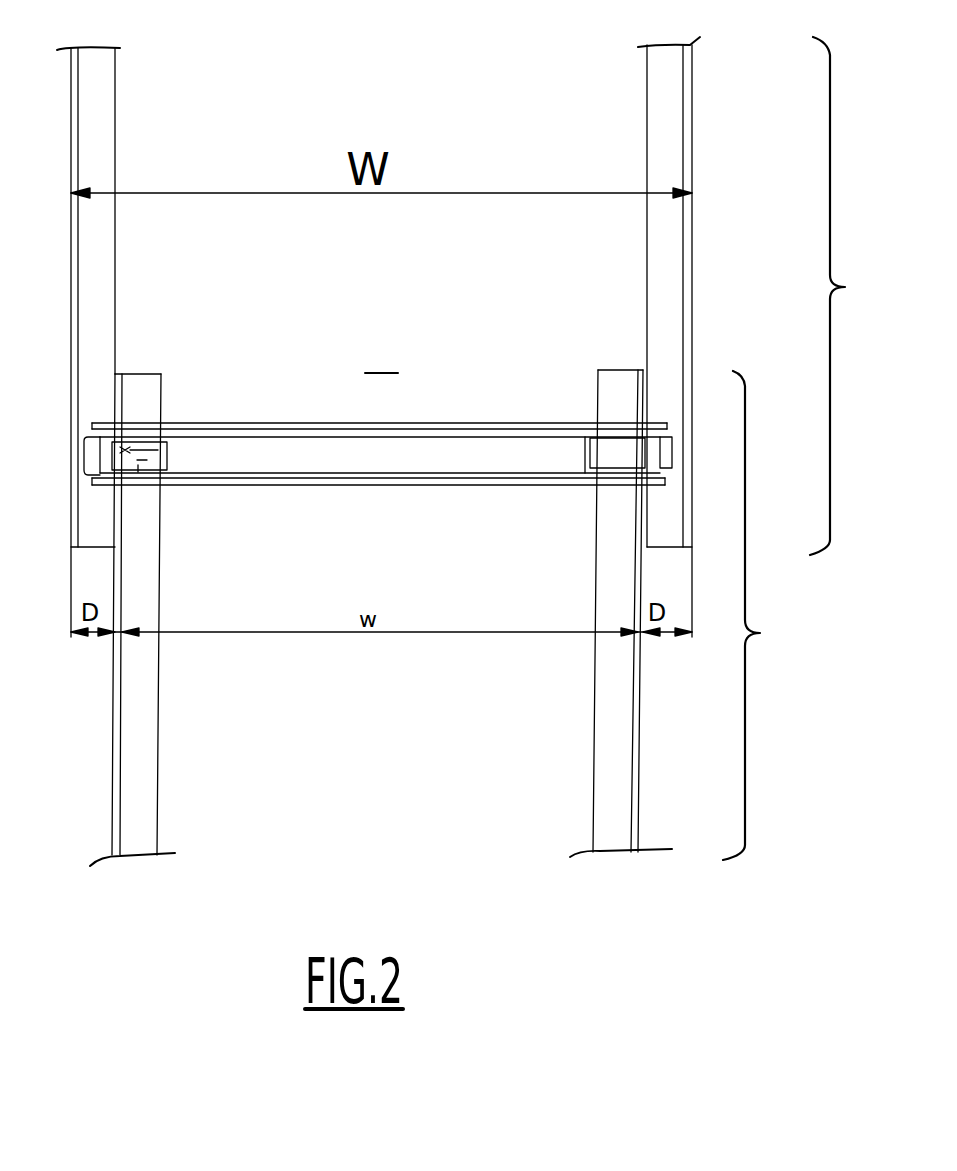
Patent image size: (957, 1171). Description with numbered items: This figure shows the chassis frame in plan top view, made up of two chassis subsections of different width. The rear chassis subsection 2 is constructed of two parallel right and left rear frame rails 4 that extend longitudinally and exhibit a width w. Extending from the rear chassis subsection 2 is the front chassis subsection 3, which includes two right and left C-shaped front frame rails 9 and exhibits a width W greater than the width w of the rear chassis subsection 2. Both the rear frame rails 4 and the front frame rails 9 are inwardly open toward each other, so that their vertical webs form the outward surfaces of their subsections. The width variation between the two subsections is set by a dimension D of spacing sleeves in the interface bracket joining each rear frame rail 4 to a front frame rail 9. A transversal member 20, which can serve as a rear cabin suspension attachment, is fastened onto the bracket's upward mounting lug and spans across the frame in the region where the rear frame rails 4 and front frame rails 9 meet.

The rear chassis subsection 2 is at (757, 615).
The front chassis subsection 3 is at (848, 296).
The rear frame rail 4 is at (140, 813).
The front frame rail 9 is at (100, 127).
The transversal member 20 is at (300, 455).